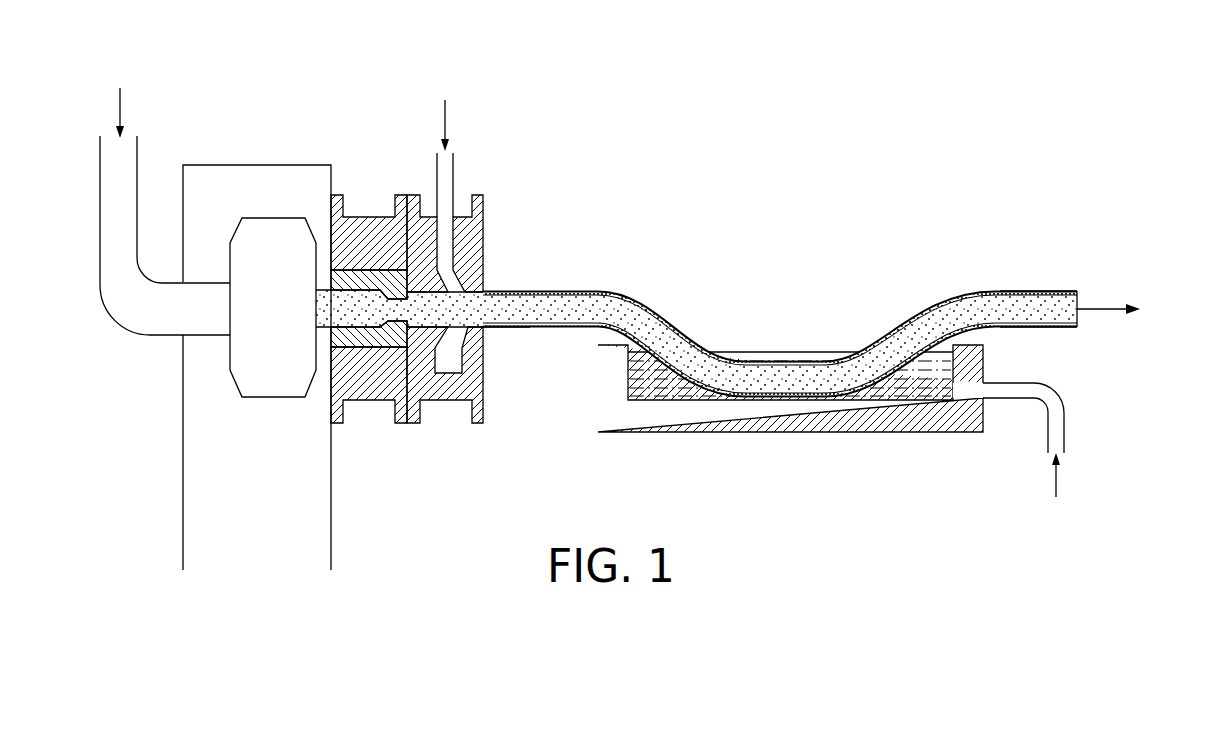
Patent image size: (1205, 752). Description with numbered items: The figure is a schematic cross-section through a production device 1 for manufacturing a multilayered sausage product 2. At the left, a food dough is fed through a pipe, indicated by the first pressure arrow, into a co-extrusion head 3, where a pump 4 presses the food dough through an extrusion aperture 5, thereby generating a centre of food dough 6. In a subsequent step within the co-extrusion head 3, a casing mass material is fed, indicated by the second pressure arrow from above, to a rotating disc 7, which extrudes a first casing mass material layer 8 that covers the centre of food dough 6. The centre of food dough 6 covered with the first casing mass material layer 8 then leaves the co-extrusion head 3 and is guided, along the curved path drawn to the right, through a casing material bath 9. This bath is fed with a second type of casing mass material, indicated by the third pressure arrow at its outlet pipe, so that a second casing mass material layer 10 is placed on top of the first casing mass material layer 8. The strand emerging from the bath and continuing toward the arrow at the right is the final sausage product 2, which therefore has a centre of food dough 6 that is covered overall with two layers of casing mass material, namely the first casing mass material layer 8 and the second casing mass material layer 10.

The production device 1 is at (620, 310).
The multilayered sausage product 2 is at (1080, 282).
The co-extrusion head 3 is at (399, 268).
The pump 4 is at (281, 316).
The extrusion aperture 5 is at (388, 283).
The centre of food dough 6 is at (398, 308).
The rotating disc 7 is at (485, 330).
The first casing mass material layer 8 is at (780, 305).
The casing material bath 9 is at (643, 378).
The second casing mass material layer 10 is at (1013, 289).